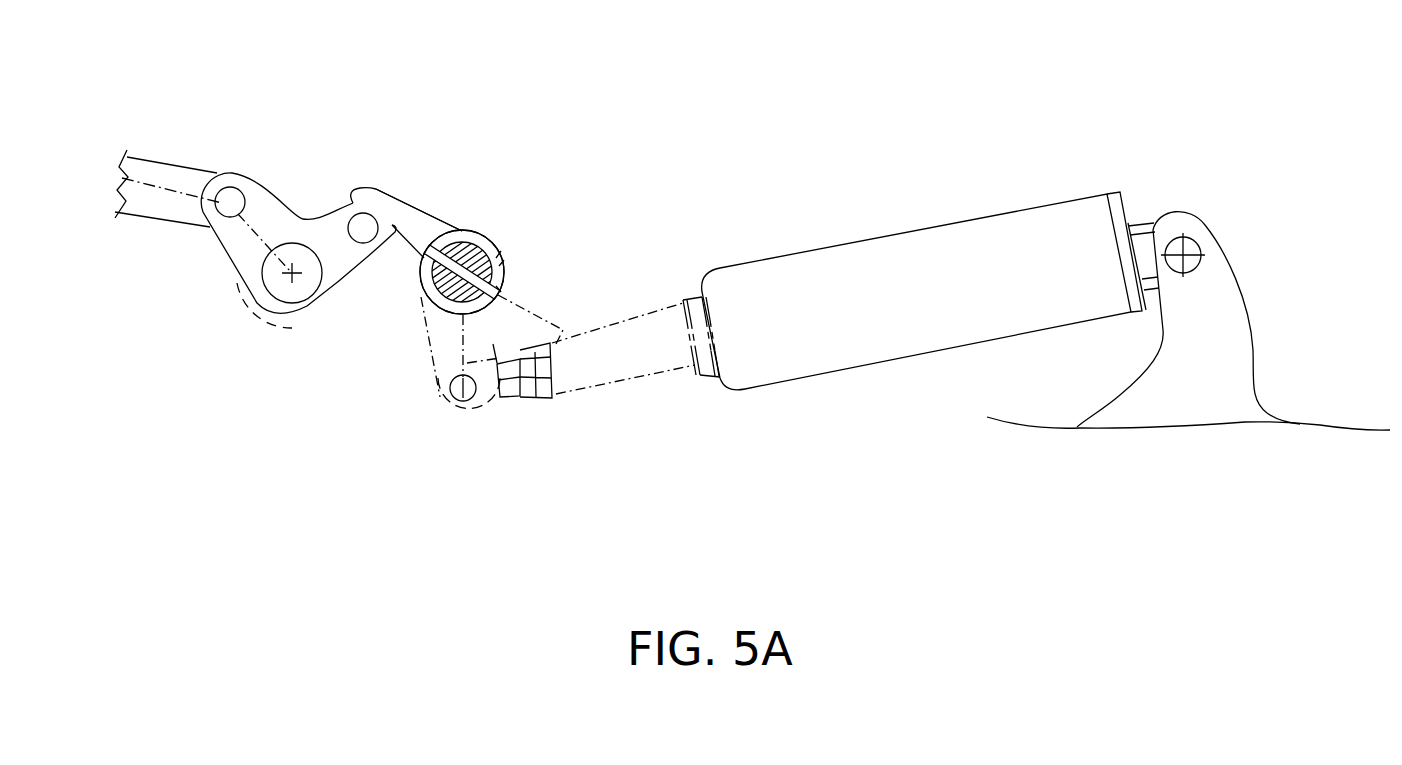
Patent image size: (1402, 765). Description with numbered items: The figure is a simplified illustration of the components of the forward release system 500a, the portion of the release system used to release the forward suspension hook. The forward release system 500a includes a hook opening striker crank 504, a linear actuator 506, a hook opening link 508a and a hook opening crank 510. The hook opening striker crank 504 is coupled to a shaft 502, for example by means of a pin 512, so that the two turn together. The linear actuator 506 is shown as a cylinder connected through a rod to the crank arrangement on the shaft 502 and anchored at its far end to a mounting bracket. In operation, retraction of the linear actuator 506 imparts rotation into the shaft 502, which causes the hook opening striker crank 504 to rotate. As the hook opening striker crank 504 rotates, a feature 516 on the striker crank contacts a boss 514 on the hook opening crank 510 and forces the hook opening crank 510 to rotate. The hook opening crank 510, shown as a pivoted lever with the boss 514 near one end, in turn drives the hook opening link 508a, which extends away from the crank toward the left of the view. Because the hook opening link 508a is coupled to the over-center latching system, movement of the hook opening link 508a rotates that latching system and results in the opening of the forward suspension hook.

The forward release system 500a is at (210, 403).
The shaft 502 is at (498, 252).
The hook opening striker crank 504 is at (458, 225).
The linear actuator 506 is at (648, 379).
The hook opening link 508a is at (165, 208).
The hook opening crank 510 is at (232, 173).
The pin 512 is at (420, 296).
The boss 514 is at (353, 220).
The feature 516 is at (387, 188).